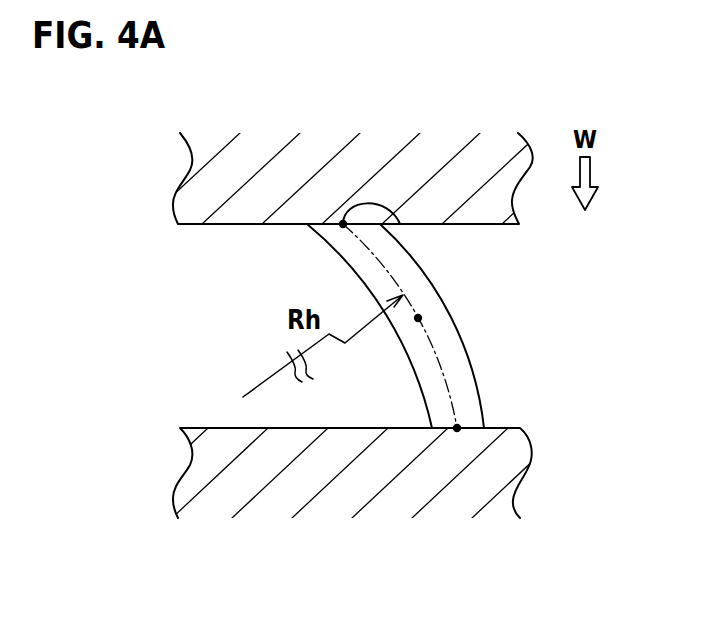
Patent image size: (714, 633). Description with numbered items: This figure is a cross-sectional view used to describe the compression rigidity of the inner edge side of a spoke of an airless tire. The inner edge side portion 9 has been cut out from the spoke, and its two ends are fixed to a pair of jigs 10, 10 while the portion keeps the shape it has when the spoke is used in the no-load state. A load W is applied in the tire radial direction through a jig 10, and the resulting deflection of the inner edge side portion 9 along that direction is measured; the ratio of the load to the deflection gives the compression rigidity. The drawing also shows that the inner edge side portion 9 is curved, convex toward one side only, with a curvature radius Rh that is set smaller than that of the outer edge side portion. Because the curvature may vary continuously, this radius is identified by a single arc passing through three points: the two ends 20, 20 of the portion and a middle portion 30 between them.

The inner edge side portion 9 is at (468, 305).
The jig 10 is at (275, 118).
The ends of the portion 20 is at (400, 224).
The middle portion 30 is at (418, 318).